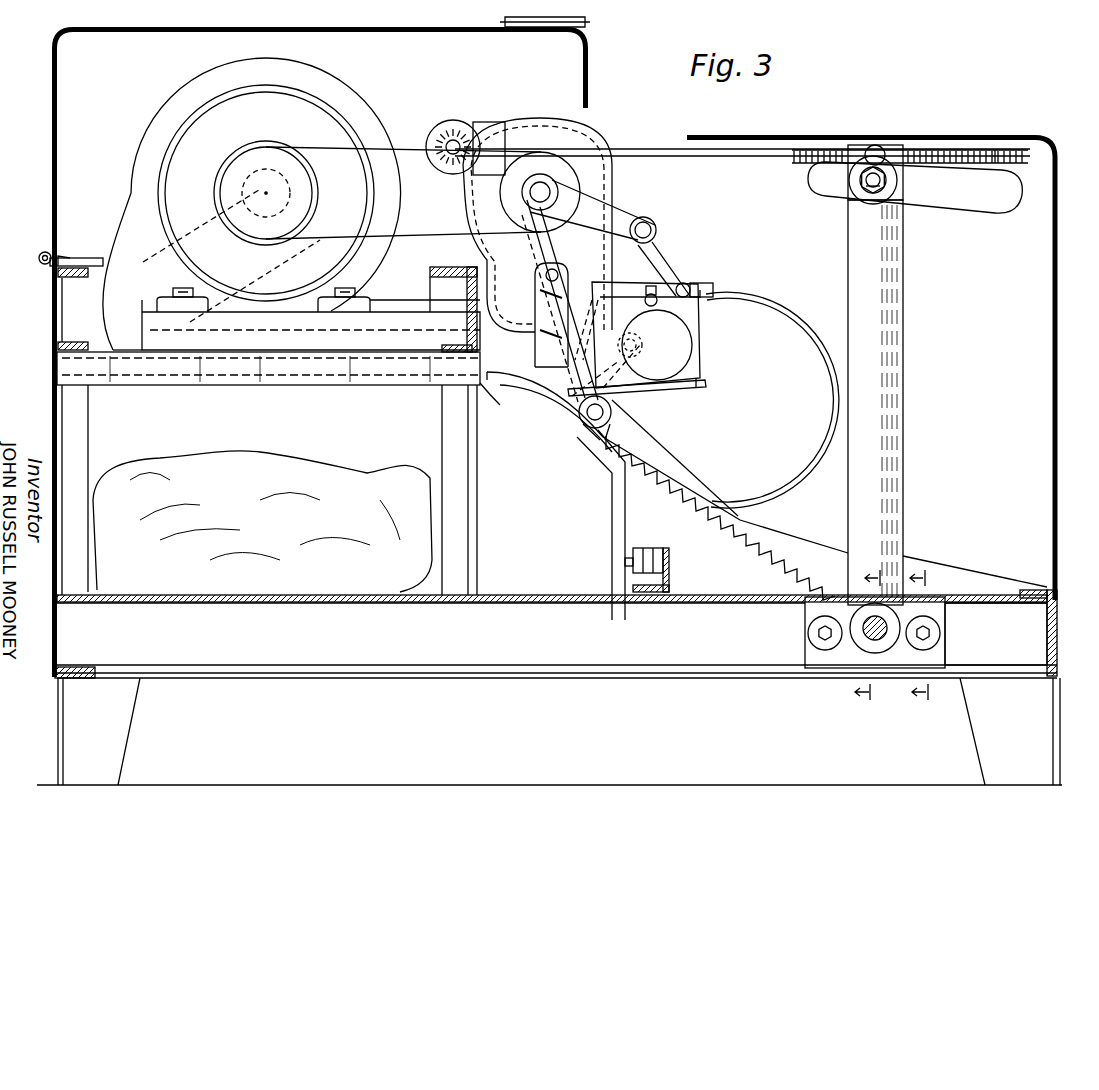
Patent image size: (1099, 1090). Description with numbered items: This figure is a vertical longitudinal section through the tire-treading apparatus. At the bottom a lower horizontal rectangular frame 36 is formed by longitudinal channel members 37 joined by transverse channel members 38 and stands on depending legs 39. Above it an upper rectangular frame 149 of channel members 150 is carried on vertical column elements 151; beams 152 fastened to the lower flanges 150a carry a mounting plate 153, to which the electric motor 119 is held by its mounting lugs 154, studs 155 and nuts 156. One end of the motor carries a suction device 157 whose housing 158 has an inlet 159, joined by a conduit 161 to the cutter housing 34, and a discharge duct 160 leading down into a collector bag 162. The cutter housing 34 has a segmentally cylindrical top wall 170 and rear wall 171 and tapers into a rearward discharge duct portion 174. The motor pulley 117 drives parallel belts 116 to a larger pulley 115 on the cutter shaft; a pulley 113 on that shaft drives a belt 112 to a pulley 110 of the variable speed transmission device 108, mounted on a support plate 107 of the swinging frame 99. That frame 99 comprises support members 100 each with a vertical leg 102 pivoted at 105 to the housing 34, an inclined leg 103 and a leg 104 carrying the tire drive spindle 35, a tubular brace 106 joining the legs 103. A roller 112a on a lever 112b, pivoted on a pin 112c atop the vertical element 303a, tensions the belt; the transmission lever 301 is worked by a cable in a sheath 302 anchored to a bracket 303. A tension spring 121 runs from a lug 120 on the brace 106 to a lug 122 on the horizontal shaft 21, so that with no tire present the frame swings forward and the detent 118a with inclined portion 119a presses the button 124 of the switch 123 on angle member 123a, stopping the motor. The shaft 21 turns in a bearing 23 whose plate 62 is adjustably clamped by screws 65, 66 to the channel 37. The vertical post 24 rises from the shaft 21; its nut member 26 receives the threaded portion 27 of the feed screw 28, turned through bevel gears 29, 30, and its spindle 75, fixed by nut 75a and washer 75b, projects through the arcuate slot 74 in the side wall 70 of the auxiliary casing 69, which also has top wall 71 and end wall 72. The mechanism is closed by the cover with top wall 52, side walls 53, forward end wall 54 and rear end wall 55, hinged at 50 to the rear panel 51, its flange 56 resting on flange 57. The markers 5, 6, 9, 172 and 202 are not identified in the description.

The section line 5- 5 is at (860, 635).
The section line 6- 6 is at (928, 635).
The bag closing machine 9 is at (34, 159).
The horizontal shaft 21 is at (893, 652).
The bearing 23 is at (794, 632).
The vertical post 24 is at (848, 305).
The nut member 26 is at (872, 143).
The externally threaded portion 27 is at (994, 150).
The feed screw 28 is at (664, 148).
The bevel gear 29 is at (480, 130).
The bevel gear 30 is at (453, 128).
The cutter housing 34 is at (621, 182).
The tire drive spindle 35 is at (641, 345).
The lower horizontal rectangular frame 36 is at (698, 680).
The longitudinal channel members 37 is at (490, 660).
The transverse channel members 38 is at (68, 634).
The legs 39 is at (128, 712).
The hinge means 50 is at (40, 258).
The rear panel 51 is at (54, 408).
The horizontal top wall 52 is at (128, 32).
The side walls 53 is at (427, 76).
The forward end wall 54 is at (590, 66).
The rear end wall 55 is at (52, 120).
The flange 56 is at (70, 256).
The horizontal flange 57 is at (82, 262).
The rectangular plate 62 is at (945, 652).
The screw 65 is at (823, 650).
The screw 66 is at (932, 630).
The auxiliary casing 69 is at (1054, 128).
The vertical side walls 70 is at (1040, 432).
The top horizontal wall 71 is at (942, 147).
The vertical end wall 72 is at (1050, 330).
The arcuate slot 74 is at (958, 205).
The spindle 75 is at (866, 181).
The nut 75a is at (886, 181).
The washer 75b is at (862, 191).
The frame 99 is at (531, 384).
The support members 100 is at (527, 304).
The vertical leg 102 is at (565, 326).
The downwardly and forwardly inclined leg 103 is at (548, 405).
The upwardly and forwardly inclined leg 104 is at (622, 396).
The pivotal mounting 105 is at (548, 268).
The horizontal tubular brace 106 is at (598, 428).
The support plate 107 is at (700, 382).
The variable speed transmission device 108 is at (637, 395).
The pulley 110 is at (678, 342).
The belt 112 is at (624, 200).
The roller 112a is at (650, 208).
The lever 112b is at (660, 248).
The pivot pin 112c is at (683, 282).
The pulley 113 is at (522, 194).
The larger pulley 115 is at (565, 172).
The parallel belts 116 is at (380, 150).
The pulley 117 is at (244, 162).
The vertical detent 118a is at (614, 546).
The electric motor 119 is at (327, 198).
The inclined portion 119a is at (566, 434).
The lug 120 is at (603, 440).
The tension spring 121 is at (740, 540).
The lug 122 is at (842, 590).
The switch 123 is at (644, 548).
The angle member 123a is at (670, 566).
The actuating button 124 is at (626, 564).
The upper rectangular frame 149 is at (79, 321).
The channel members 150 is at (58, 298).
The lower flanges 150a is at (58, 342).
The vertical column elements 151 is at (88, 409).
The beams 152 is at (262, 384).
The mounting plate 153 is at (400, 305).
The mounting lugs 154 is at (195, 305).
The studs 155 is at (344, 288).
The nuts 156 is at (375, 298).
The vacuum or suction device 157 is at (186, 72).
The housing 158 is at (144, 142).
The inlet 159 is at (264, 170).
The discharge duct 160 is at (375, 388).
The conduit 161 is at (128, 334).
The collector bag 162 is at (208, 458).
The top wall 170 is at (535, 121).
The rear wall 171 is at (464, 216).
The rod 172 is at (600, 297).
The cylindrical discharge duct portion 174 is at (497, 385).
The tab 202 is at (585, 20).
The lever 301 is at (640, 286).
The flexible sheath 302 is at (752, 298).
The bracket 303 is at (708, 283).
The vertical element 303a is at (700, 300).